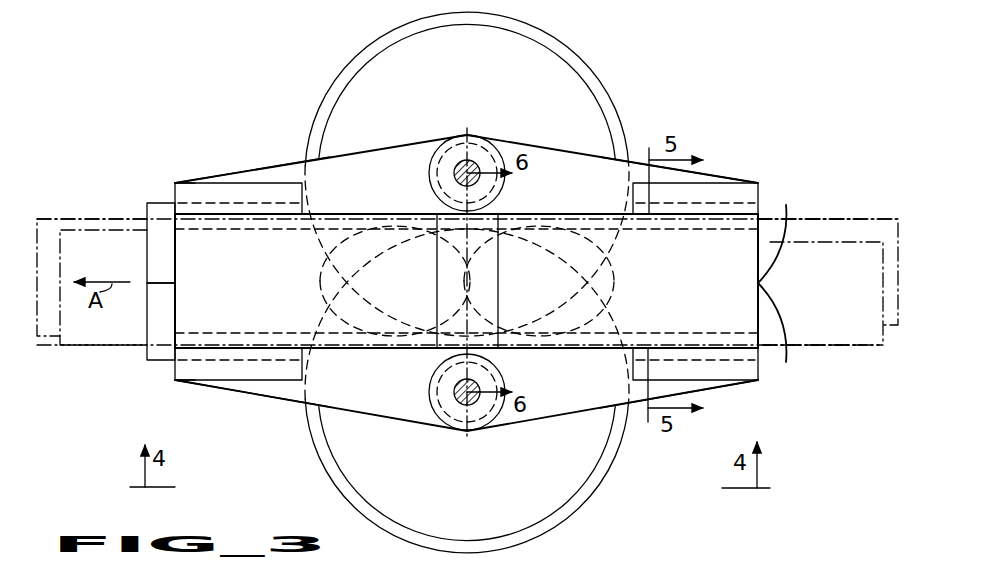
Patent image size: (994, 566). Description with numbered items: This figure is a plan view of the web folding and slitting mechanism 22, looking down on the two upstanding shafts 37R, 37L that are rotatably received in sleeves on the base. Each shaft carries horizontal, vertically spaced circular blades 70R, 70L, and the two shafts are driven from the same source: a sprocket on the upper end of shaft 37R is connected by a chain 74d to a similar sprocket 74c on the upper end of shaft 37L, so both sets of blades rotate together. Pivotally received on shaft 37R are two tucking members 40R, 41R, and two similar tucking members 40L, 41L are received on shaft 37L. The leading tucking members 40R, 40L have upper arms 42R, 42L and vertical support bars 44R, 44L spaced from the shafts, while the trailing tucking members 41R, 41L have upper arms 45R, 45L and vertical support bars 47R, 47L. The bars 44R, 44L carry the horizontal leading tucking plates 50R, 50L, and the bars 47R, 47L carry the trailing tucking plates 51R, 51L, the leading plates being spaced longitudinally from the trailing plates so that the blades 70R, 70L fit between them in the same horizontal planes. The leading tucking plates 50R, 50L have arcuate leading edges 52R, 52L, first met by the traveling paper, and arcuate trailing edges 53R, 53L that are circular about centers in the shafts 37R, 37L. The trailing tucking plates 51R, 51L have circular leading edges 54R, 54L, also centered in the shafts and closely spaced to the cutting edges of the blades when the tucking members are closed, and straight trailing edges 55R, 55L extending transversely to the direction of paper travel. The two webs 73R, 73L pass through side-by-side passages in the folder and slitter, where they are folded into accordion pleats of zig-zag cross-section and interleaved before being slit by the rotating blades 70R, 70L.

The web folding and slitting mechanism 22 is at (664, 50).
The circular blades 70R is at (378, 57).
The circular blades 70L is at (565, 492).
The upstanding shaft 37R is at (468, 160).
The upstanding shaft 37L is at (457, 405).
The tucking member 40R is at (558, 147).
The tucking member 40L is at (574, 414).
The tucking member 41R is at (290, 160).
The tucking member 41L is at (300, 404).
The upper arm 42R is at (624, 158).
The upper arm 42L is at (628, 405).
The vertical support bar 44R is at (745, 183).
The vertical support bar 44L is at (738, 382).
The upper arm 45R is at (238, 172).
The upper arm 45L is at (258, 396).
The vertical support bar 47R is at (195, 183).
The vertical support bar 47L is at (185, 381).
The tucking plates 51R is at (155, 208).
The tucking plates 51L is at (155, 352).
The trailing edges 55R is at (147, 250).
The trailing edges 55L is at (147, 337).
The web 73R is at (898, 214).
The web 73L is at (850, 350).
The tucking plates 50R is at (786, 212).
The tucking plates 50L is at (780, 362).
The arcuate leading edges 52R is at (772, 262).
The arcuate leading edges 52L is at (772, 320).
The leading edges 54R is at (410, 242).
The leading edges 54L is at (410, 318).
The arcuate trailing edges 53R is at (522, 242).
The arcuate trailing edges 53L is at (522, 320).
The sprocket 74c is at (440, 368).
The chain 74d is at (498, 352).